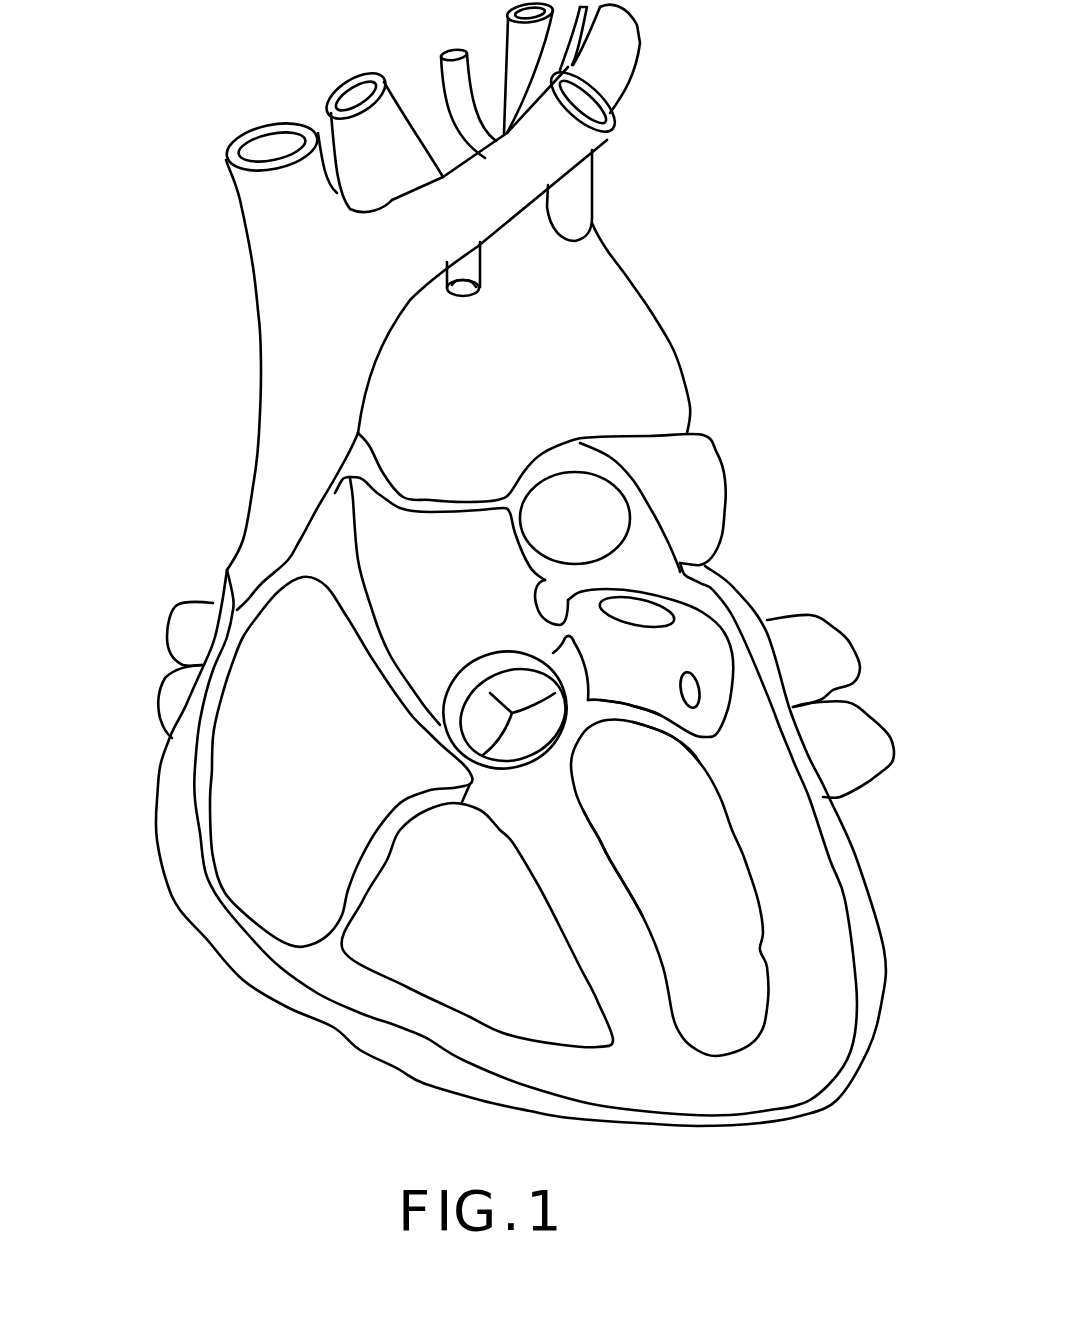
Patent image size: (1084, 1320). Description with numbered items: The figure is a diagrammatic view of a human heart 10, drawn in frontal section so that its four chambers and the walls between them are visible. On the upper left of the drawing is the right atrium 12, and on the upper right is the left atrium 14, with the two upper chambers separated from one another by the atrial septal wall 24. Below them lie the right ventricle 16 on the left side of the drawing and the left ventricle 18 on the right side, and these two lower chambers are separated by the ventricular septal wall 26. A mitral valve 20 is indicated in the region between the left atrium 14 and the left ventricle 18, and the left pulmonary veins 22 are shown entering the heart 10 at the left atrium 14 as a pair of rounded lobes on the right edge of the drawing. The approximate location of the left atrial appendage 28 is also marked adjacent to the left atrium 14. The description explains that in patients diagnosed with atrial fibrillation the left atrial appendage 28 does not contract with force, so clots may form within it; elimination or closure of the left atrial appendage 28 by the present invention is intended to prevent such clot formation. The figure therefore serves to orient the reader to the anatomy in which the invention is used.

The human heart 10 is at (128, 110).
The right atrium 12 is at (316, 735).
The left atrium 14 is at (628, 668).
The right ventricle 16 is at (479, 946).
The left ventricle 18 is at (715, 946).
The mitral valve 20 is at (650, 781).
The left pulmonary veins 22 is at (850, 732).
The atrial septal wall 24 is at (440, 727).
The ventricular septal wall 26 is at (620, 972).
The left atrial appendage 28 is at (645, 682).